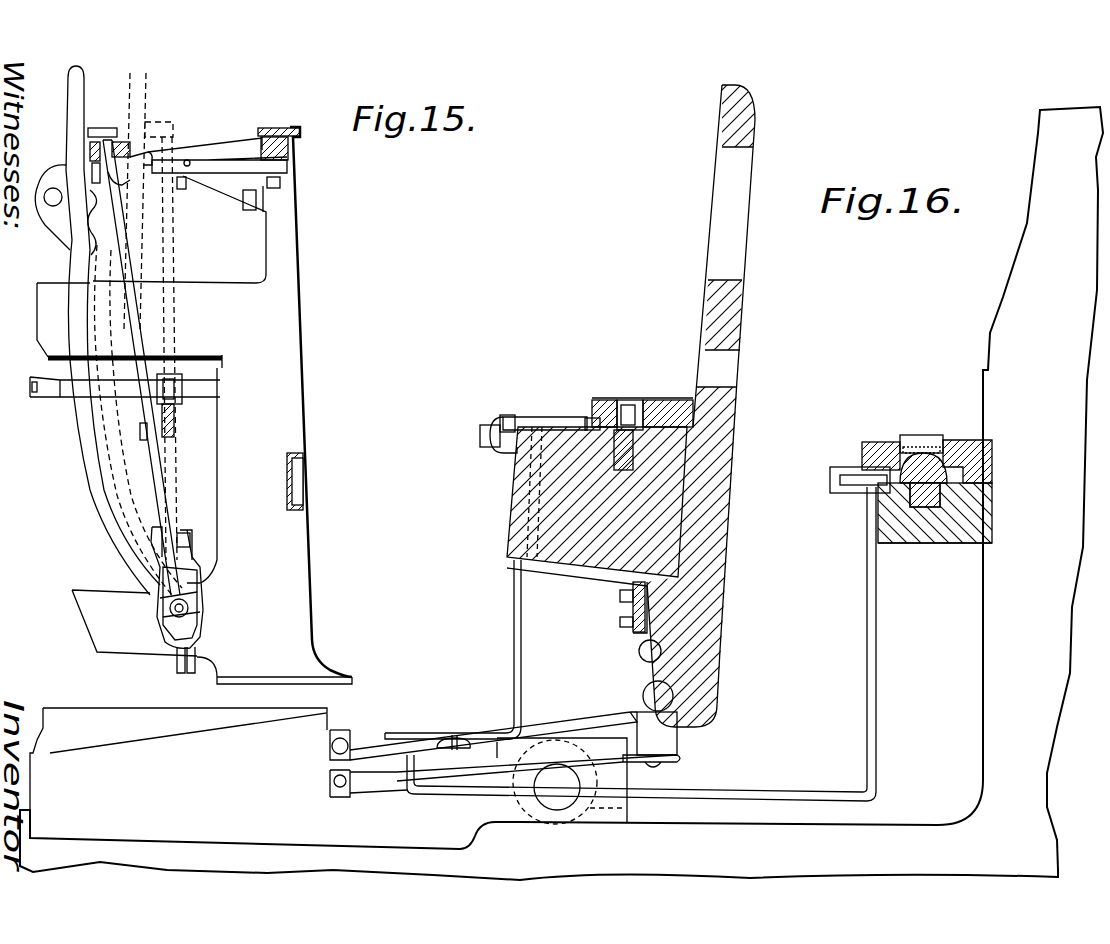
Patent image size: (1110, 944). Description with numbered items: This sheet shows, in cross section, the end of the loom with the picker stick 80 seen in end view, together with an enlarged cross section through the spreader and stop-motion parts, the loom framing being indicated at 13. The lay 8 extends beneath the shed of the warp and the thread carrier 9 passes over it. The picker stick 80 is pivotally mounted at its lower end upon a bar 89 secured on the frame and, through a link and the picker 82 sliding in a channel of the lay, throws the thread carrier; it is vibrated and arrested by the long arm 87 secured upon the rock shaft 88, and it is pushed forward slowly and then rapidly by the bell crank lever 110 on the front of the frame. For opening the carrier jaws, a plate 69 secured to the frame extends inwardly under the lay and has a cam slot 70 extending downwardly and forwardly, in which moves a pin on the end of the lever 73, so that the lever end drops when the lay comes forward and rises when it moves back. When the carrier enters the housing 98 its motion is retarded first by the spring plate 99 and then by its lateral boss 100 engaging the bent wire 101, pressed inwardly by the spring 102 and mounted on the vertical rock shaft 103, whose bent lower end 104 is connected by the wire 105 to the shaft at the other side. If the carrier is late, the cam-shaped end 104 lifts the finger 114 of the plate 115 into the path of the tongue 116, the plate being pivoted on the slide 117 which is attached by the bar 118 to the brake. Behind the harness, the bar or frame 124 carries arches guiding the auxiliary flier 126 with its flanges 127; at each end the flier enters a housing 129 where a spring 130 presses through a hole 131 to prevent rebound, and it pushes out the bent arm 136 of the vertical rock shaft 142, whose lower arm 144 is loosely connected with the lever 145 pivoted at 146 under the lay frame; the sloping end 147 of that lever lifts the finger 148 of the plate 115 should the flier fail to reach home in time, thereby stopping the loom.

In FIG. 15, the lay 8 is at (115, 128).
In FIG. 16, the lay 8 is at (530, 503).
In FIG. 16, the thread carrier 9 is at (634, 402).
In FIG. 15, the frame 13 is at (283, 237).
In FIG. 16, the frame 13 is at (1023, 302).
In FIG. 15, the plate 69 is at (212, 128).
In FIG. 15, the cam slot 70 is at (124, 181).
In FIG. 16, the lever 73 is at (633, 630).
In FIG. 15, the picker stick 80 is at (133, 327).
In FIG. 16, the picker 82 is at (600, 402).
In FIG. 15, the arm 87 is at (176, 418).
In FIG. 15, the rock shaft 88 is at (50, 397).
In FIG. 15, the bar 89 is at (188, 609).
In FIG. 15, the housing 98 is at (90, 132).
In FIG. 16, the housing 98 is at (669, 400).
In FIG. 16, the spring plate 99 is at (620, 400).
In FIG. 16, the lateral boss or extension 100 is at (583, 425).
In FIG. 16, the bent wire 101 is at (515, 417).
In FIG. 16, the spring 102 is at (480, 433).
In FIG. 16, the vertical rock shaft 103 is at (518, 650).
In FIG. 16, the forwardly projecting arm 104 is at (375, 745).
In FIG. 16, the wire 105 is at (447, 747).
In FIG. 15, the bell crank lever 110 is at (243, 173).
In FIG. 16, the finger 114 is at (332, 750).
In FIG. 16, the plate 115 is at (335, 727).
In FIG. 16, the tongue 116 is at (435, 725).
In FIG. 16, the slide 117 is at (120, 753).
In FIG. 16, the bar 118 is at (707, 788).
In FIG. 16, the bar or frame 124 is at (948, 530).
In FIG. 16, the auxiliary flier 126 is at (920, 460).
In FIG. 16, the flanges 127 is at (990, 473).
In FIG. 16, the housing 129 is at (875, 442).
In FIG. 16, the spring 130 is at (940, 438).
In FIG. 16, the hole 131 is at (965, 448).
In FIG. 16, the bent arm 136 is at (837, 488).
In FIG. 16, the vertical rock shaft 142 is at (867, 574).
In FIG. 16, the lower arm 144 is at (800, 795).
In FIG. 16, the lever 145 is at (385, 780).
In FIG. 16, the pivot 146 is at (675, 740).
In FIG. 16, the downwardly and forwardly sloping end 147 is at (328, 794).
In FIG. 16, the finger 148 is at (333, 780).